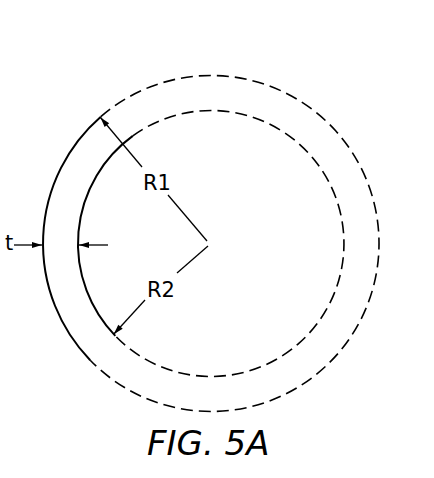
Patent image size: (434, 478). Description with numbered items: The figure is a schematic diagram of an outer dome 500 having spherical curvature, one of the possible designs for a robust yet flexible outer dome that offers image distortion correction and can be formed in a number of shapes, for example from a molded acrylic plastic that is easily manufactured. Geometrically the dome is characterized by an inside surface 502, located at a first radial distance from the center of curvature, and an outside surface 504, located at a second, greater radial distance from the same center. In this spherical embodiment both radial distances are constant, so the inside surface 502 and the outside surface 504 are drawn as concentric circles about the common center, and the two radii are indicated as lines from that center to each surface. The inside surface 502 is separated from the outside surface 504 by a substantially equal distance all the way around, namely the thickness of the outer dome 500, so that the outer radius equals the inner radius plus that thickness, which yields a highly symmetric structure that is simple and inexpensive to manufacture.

The ring-shaped member 500 is at (211, 214).
The inside surface 502 is at (264, 123).
The outside surface 504 is at (286, 96).